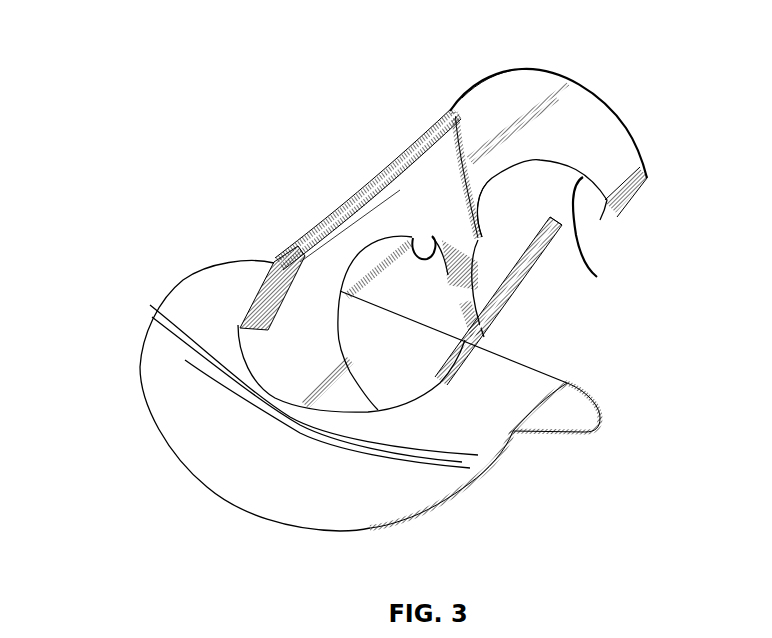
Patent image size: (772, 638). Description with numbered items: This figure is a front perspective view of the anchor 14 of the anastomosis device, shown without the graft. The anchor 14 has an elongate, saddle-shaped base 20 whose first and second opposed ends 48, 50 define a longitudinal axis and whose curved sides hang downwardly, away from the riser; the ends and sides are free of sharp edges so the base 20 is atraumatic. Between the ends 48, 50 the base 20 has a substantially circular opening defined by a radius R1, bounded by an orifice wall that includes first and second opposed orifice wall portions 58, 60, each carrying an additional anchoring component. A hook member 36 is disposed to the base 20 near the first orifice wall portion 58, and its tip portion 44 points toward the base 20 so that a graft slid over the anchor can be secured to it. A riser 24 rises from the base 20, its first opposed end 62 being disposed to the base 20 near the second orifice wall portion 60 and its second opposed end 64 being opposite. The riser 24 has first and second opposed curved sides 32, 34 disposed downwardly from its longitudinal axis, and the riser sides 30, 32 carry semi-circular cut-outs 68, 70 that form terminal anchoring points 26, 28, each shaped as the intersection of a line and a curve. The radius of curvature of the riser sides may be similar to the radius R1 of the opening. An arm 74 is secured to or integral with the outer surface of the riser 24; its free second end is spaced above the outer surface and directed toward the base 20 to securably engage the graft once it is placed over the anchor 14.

The anchor 14 is at (242, 109).
The base 20 is at (172, 410).
The riser 24 is at (493, 73).
The terminal anchoring point 26 is at (443, 260).
The terminal anchoring point 28 is at (608, 215).
The riser side 30 is at (303, 257).
The first opposed curved side 32 is at (460, 225).
The second opposed curved side 34 is at (612, 128).
The hook member 36 is at (507, 293).
The tip portion 44 is at (556, 228).
The first opposed end 48 is at (568, 385).
The second opposed end 50 is at (190, 278).
The first opposed orifice wall portion 58 is at (490, 372).
The second opposed orifice wall portion 60 is at (287, 398).
The first opposed end 62 is at (242, 328).
The second opposed end 64 is at (603, 96).
The cut-out 68 is at (413, 238).
The cut-out 70 is at (598, 234).
The arm 74 is at (446, 280).
The radius R1 is at (529, 84).